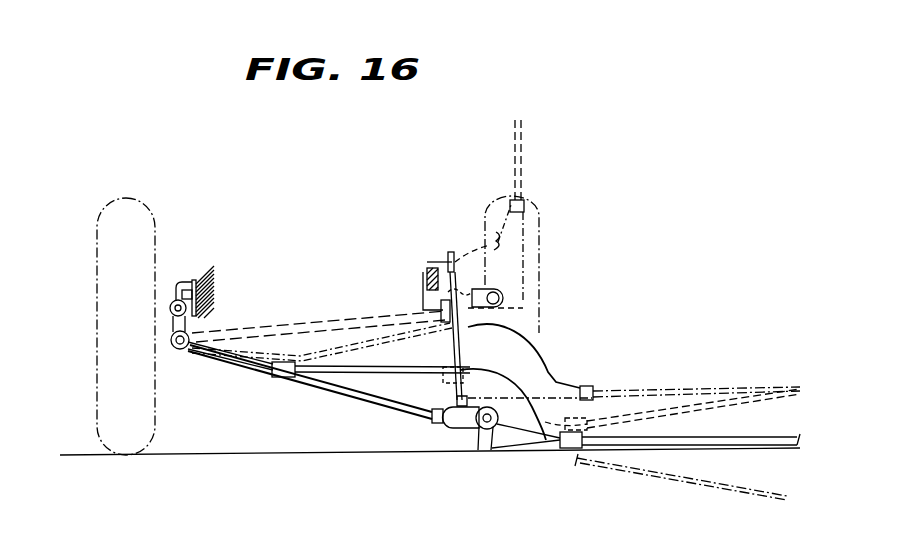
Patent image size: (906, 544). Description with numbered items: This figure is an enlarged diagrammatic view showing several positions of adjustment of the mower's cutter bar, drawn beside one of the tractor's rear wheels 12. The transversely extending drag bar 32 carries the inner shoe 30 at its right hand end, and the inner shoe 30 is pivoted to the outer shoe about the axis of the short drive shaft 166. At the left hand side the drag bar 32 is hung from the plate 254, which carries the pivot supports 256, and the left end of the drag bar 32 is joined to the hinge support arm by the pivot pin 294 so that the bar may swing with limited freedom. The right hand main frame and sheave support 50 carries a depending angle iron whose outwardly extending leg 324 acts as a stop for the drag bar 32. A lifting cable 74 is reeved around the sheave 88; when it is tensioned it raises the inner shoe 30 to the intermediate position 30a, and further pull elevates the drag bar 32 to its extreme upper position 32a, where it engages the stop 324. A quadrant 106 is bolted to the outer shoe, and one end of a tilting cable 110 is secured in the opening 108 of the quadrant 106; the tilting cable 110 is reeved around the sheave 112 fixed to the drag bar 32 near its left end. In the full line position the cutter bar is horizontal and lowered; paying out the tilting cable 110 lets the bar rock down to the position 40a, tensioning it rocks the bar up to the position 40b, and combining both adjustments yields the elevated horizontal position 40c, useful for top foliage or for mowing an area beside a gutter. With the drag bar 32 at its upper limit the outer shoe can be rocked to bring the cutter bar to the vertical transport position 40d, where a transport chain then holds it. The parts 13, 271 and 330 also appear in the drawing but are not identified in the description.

The wheel 13 is at (97, 289).
The wheel support bracket 271 is at (189, 281).
The plate 254 is at (205, 277).
The pivot supports 256 is at (170, 309).
The pivot pin 294 is at (180, 350).
The extreme upper position of drag bar 32a is at (312, 322).
The outwardly extending leg 324 is at (435, 307).
The right hand main frame and sheave support 50 is at (433, 256).
The sheave 88 is at (452, 253).
The vertical transport position of cutter bar 40d is at (524, 160).
The rear wheels 12 is at (540, 290).
The lifting cable 74 is at (454, 348).
The tilting cable 110 is at (418, 374).
The sheave 112 is at (286, 378).
The drag bar 32 is at (383, 401).
The intermediate position of inner shoe 30a is at (465, 394).
The inner shoe 30 is at (462, 423).
The short drive shaft 166 is at (481, 447).
The quadrant 106 is at (527, 394).
The opening 108 is at (539, 448).
The elevated horizontal position of cutter bar 40c is at (657, 388).
The upwardly rocked position of cutter bar 40b is at (697, 408).
The support bar 330 is at (755, 450).
The downwardly rocked position of cutter bar 40a is at (773, 495).